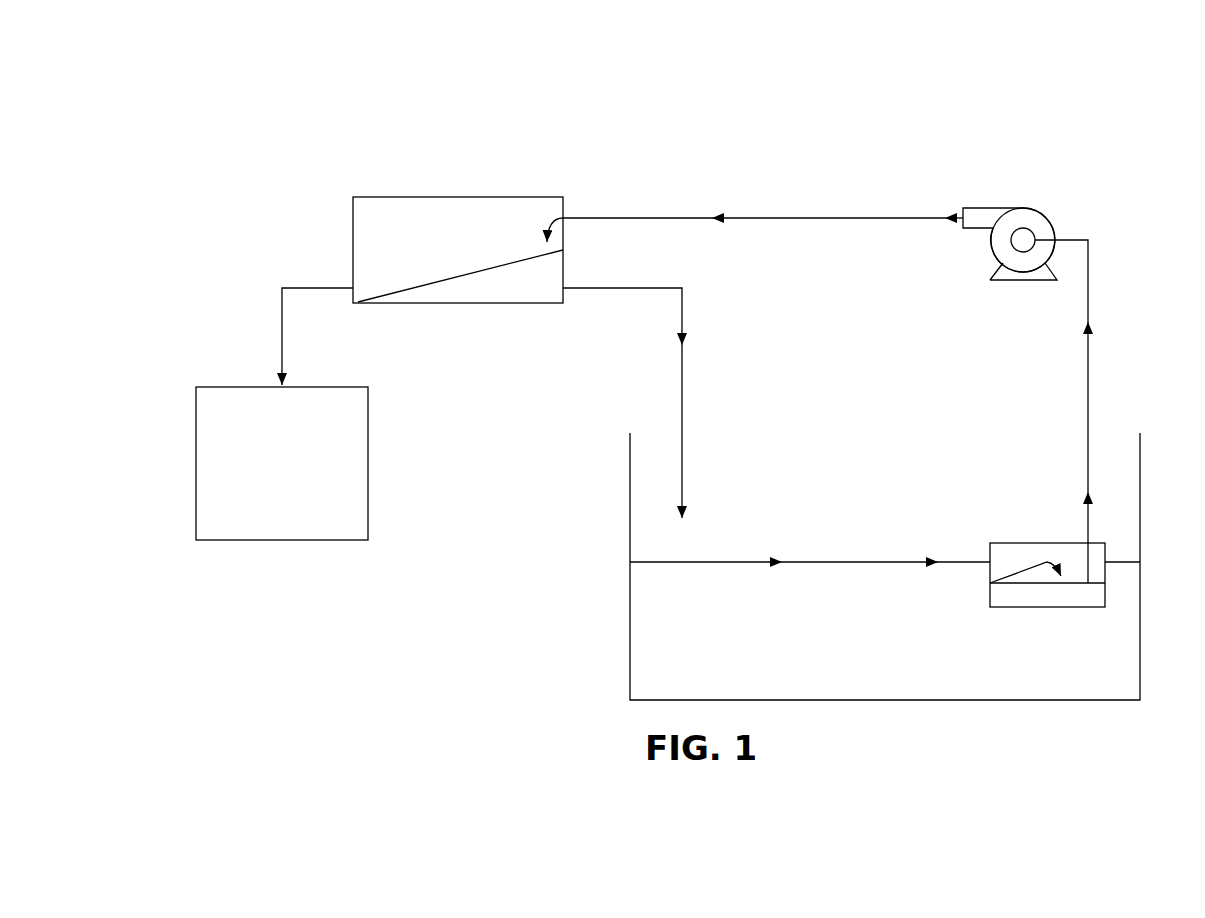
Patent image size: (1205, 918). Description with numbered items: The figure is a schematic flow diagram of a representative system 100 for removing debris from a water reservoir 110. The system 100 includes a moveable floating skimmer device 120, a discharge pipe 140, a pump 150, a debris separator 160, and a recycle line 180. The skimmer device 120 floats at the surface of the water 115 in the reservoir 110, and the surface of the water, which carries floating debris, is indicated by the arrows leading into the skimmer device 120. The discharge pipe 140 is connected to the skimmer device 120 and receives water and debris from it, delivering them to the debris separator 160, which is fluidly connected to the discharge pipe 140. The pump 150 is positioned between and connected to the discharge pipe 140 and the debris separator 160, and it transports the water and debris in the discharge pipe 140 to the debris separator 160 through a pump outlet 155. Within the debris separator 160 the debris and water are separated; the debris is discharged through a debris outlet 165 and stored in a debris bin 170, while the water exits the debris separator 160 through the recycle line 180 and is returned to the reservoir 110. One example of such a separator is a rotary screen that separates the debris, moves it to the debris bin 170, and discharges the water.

The system 100 is at (323, 98).
The water reservoir 110 is at (630, 517).
The water 115 is at (867, 634).
The moveable floating skimmer device 120 is at (990, 595).
The discharge pipe 140 is at (1088, 395).
The pump 150 is at (1013, 283).
The pump outlet 155 is at (763, 218).
The debris separator 160 is at (458, 248).
The debris outlet 165 is at (282, 337).
The debris bin 170 is at (343, 474).
The recycle line 180 is at (683, 425).